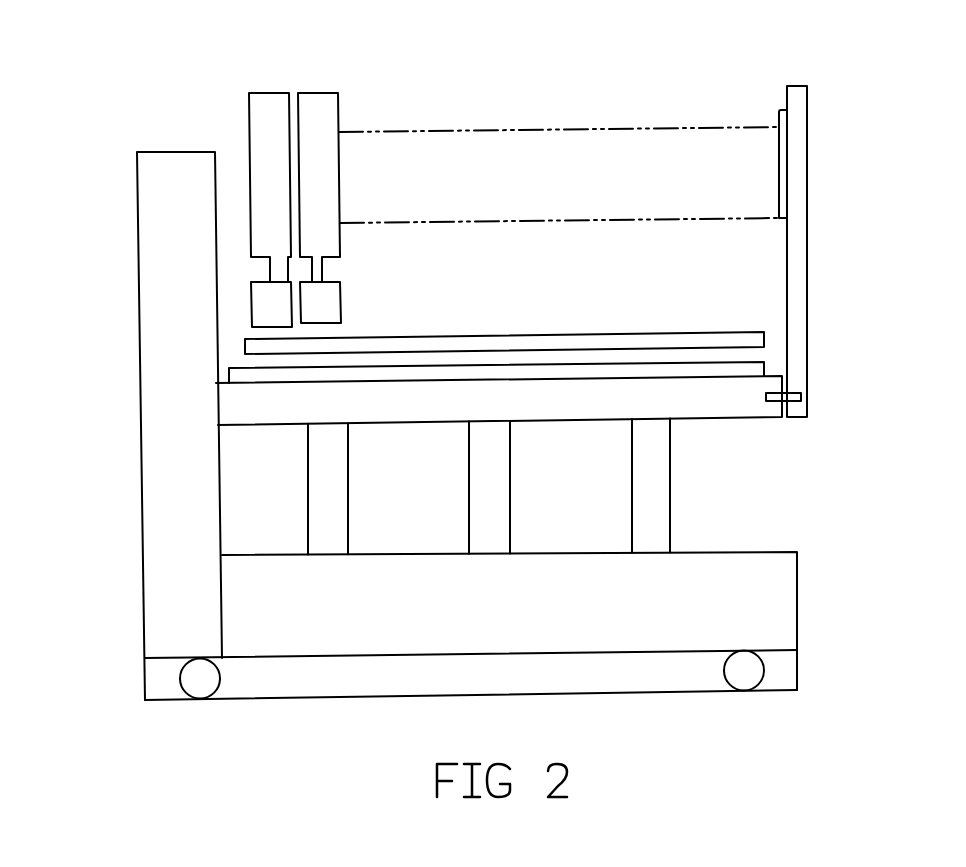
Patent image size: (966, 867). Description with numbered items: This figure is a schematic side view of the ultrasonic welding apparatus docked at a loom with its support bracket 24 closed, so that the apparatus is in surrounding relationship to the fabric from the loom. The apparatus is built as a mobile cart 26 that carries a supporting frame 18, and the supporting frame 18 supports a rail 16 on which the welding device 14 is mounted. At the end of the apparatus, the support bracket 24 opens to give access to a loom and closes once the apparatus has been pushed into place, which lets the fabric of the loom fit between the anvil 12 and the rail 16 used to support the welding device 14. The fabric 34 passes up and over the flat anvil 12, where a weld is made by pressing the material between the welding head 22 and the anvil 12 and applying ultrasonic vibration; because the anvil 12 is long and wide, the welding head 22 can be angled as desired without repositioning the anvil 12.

The anvil 12 is at (712, 365).
The welding device 14 is at (317, 117).
The rail 16 is at (665, 138).
The supporting frame 18 is at (492, 492).
The welding head 22 is at (297, 312).
The support bracket 24 is at (807, 280).
The cart 26 is at (293, 658).
The fabric 34 is at (548, 340).